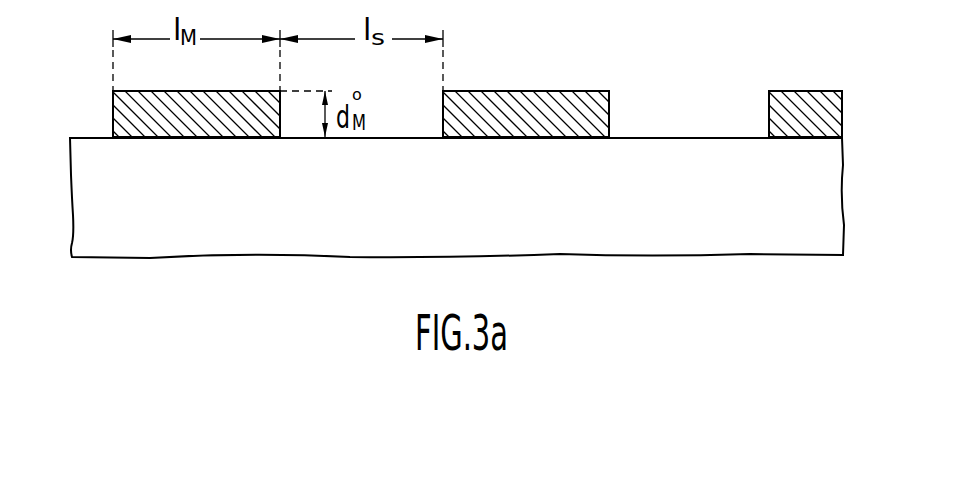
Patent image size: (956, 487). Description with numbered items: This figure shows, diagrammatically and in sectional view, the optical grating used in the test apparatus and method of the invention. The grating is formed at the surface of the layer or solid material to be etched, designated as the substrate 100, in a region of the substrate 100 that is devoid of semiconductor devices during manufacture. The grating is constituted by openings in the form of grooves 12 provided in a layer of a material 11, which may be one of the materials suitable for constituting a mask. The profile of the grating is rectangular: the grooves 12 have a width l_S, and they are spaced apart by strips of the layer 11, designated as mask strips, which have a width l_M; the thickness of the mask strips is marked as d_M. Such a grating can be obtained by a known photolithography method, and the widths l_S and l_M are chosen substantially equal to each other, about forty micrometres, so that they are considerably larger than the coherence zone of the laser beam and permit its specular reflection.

The layer of mask material 11 is at (558, 102).
The grooves 12 is at (677, 130).
The substrate 100 is at (122, 227).